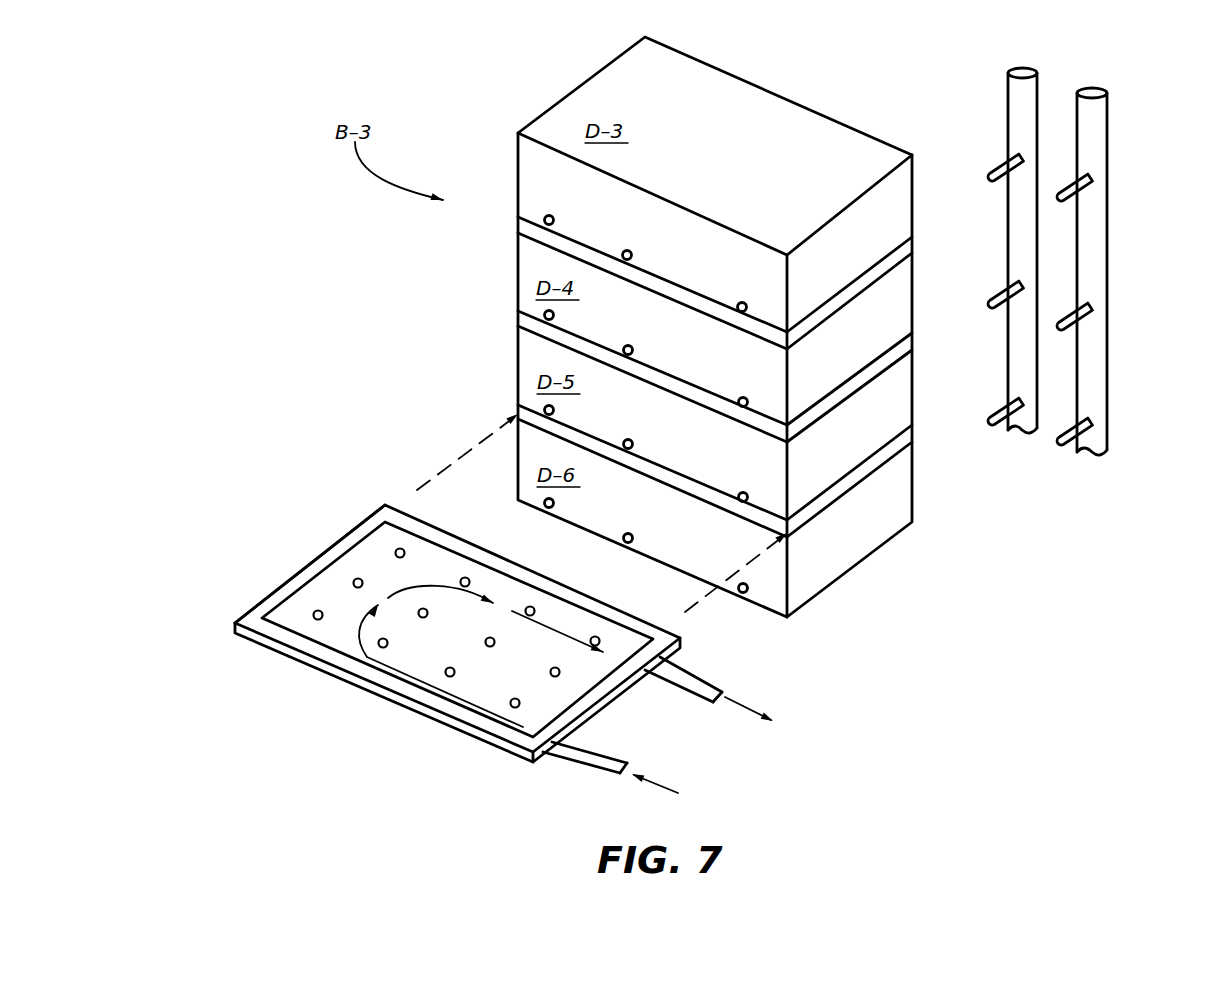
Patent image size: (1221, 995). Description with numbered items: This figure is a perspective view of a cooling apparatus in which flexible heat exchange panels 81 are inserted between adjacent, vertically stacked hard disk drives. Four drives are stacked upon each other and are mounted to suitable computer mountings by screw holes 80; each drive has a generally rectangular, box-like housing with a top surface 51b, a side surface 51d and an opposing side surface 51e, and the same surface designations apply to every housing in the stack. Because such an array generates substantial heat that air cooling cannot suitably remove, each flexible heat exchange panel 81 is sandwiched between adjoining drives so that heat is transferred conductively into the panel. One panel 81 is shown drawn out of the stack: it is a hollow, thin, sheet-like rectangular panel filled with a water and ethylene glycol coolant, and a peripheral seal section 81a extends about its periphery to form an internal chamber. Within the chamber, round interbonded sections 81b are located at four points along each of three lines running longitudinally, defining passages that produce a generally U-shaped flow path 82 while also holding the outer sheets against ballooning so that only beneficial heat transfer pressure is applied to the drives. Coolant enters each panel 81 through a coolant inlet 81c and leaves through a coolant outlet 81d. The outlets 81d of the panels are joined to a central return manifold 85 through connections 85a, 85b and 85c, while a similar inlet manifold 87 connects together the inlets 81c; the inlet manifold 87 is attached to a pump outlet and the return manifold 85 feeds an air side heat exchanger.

The top surface 51b is at (749, 172).
The side surface 51d is at (876, 253).
The opposing side surface 51e is at (704, 258).
The screw holes 80 is at (622, 254).
The flexible heat exchange panel 81 is at (525, 222).
The peripheral seal section 81a is at (292, 583).
The round interbonded sections 81b is at (356, 580).
The coolant inlet 81c is at (590, 758).
The coolant outlet 81d is at (695, 688).
The U-shaped flow path 82 is at (430, 688).
The central return manifold 85 is at (985, 246).
The connection 85a is at (1000, 167).
The connection 85b is at (1000, 300).
The connection 85c is at (1000, 418).
The inlet manifold 87 is at (1100, 118).